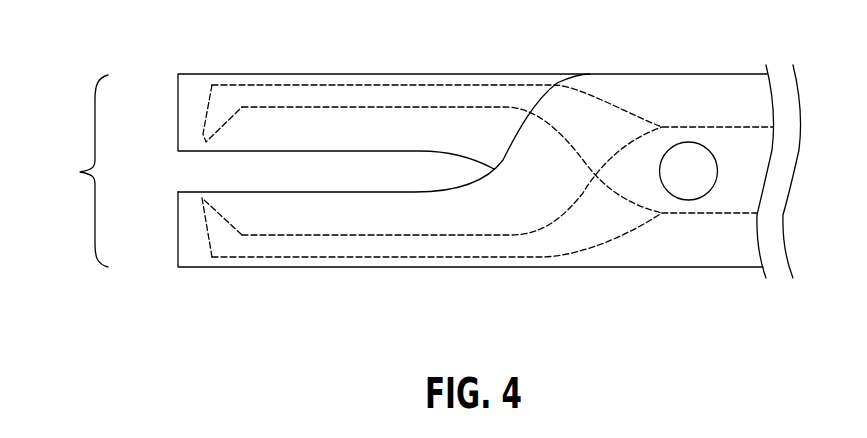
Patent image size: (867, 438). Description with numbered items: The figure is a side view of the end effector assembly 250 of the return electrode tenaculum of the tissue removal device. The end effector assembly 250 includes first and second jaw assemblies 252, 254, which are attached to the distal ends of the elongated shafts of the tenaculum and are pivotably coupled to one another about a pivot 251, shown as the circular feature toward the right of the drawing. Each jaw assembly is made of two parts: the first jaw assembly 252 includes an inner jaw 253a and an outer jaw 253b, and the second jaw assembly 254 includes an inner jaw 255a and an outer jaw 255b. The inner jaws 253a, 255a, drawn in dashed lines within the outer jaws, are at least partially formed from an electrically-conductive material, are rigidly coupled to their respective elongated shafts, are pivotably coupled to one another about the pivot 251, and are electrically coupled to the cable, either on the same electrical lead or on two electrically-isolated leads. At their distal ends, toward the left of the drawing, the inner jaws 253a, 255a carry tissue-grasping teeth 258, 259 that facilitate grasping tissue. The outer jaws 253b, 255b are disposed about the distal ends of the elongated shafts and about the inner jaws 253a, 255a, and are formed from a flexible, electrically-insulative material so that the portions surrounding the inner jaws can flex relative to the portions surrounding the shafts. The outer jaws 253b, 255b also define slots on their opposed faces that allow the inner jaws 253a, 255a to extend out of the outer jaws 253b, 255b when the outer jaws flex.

The end effector assembly 250 is at (70, 171).
The pivot 251 is at (698, 158).
The first jaw assembly 252 is at (465, 60).
The second jaw assembly 254 is at (529, 299).
The inner jaw 253a is at (297, 92).
The outer jaw 253b is at (192, 87).
The inner jaw 255a is at (368, 248).
The outer jaw 255b is at (194, 253).
The tissue-grasping teeth 258 is at (203, 108).
The tissue-grasping teeth 259 is at (203, 230).